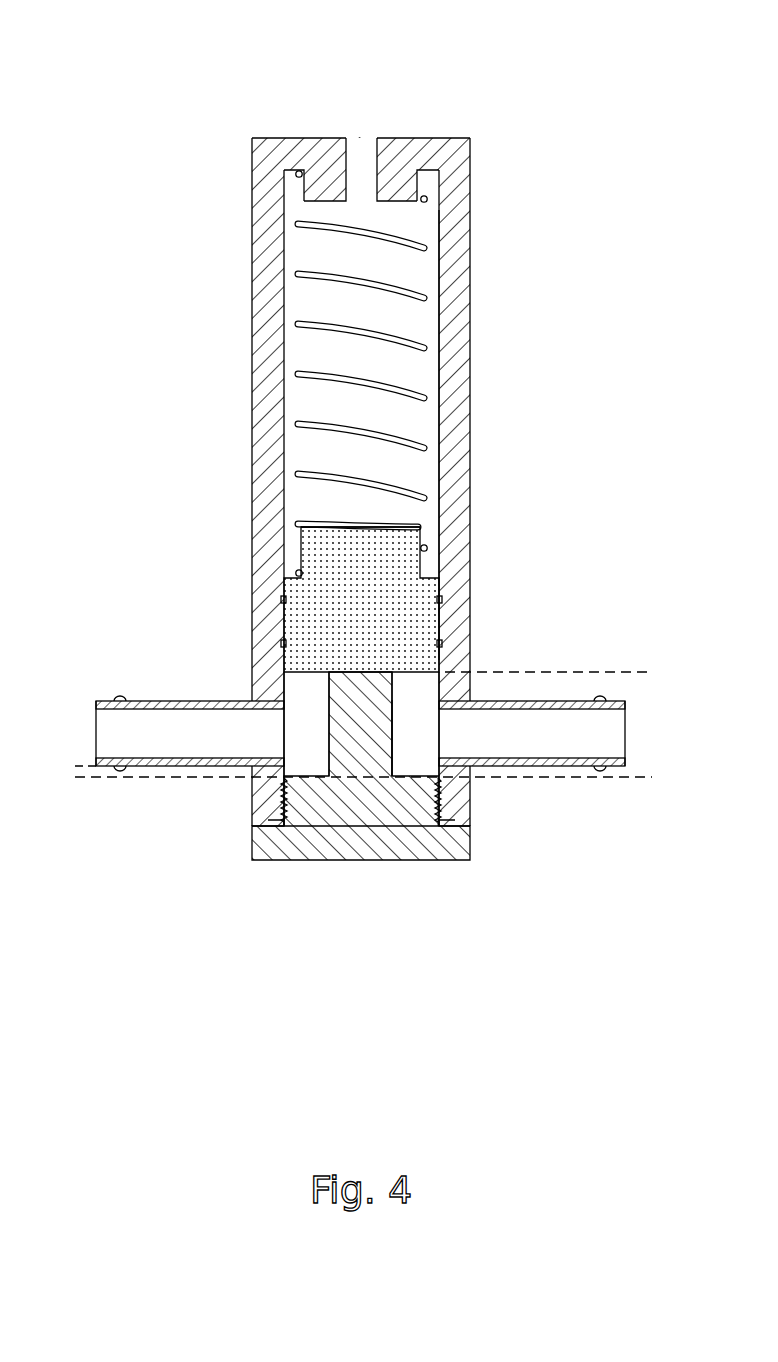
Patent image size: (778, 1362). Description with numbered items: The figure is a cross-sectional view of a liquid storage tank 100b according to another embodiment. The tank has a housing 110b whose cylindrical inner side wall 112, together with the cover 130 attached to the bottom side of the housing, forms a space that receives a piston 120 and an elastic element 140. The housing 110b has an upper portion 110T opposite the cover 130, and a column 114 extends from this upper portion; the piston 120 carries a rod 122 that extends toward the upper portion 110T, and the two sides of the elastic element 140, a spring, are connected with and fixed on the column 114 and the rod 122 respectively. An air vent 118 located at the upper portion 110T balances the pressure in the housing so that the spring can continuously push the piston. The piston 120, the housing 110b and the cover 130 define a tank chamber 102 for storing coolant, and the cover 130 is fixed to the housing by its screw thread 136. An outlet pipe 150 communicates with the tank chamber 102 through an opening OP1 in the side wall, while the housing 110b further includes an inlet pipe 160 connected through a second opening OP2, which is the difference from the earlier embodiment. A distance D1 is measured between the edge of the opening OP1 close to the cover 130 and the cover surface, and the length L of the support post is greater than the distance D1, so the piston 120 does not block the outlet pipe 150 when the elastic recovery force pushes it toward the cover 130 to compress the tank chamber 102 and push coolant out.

The liquid storage tank 100b is at (130, 35).
The housing 110b is at (252, 358).
The upper portion 110T is at (425, 130).
The air vent 118 is at (360, 138).
The column 114 is at (405, 180).
The inner side wall 112 is at (445, 277).
The elastic element 140 is at (405, 237).
The piston 120 is at (369, 562).
The rod 122 is at (378, 532).
The cover 130 is at (362, 850).
The screw thread 136 is at (283, 795).
The inlet pipe 160 is at (145, 701).
The outlet pipe 150 is at (575, 766).
The opening OP1 is at (438, 730).
The opening OP2 is at (285, 730).
The tank chamber 102 is at (427, 772).
The length L is at (640, 672).
The distance D1 is at (71, 742).